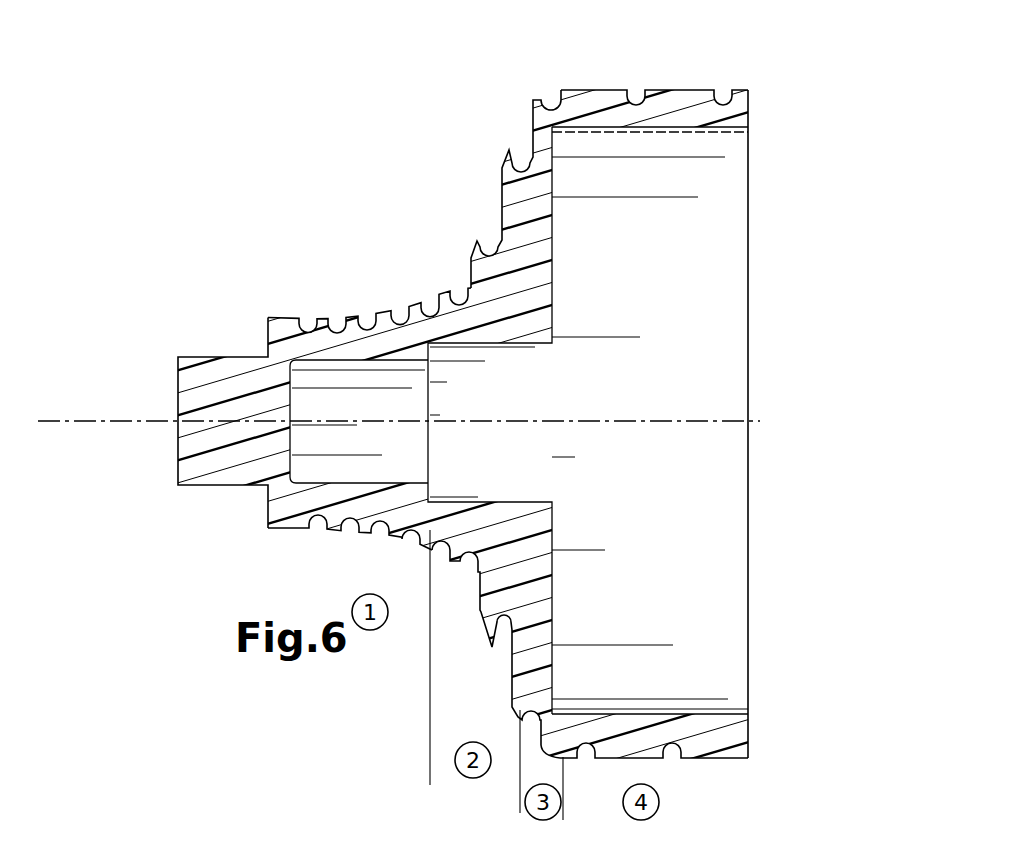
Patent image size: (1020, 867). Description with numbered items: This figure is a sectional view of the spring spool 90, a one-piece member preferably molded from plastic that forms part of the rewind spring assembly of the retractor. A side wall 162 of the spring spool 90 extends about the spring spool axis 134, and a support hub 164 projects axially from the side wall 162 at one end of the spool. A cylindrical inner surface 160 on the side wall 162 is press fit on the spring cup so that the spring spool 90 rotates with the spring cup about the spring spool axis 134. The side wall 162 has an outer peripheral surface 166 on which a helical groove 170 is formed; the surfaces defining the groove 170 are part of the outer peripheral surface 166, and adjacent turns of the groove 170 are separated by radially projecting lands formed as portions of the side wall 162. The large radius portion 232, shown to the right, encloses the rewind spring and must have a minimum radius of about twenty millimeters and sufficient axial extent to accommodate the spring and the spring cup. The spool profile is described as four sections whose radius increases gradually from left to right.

The spring spool 90 is at (240, 222).
The large radius portion 232 is at (563, 62).
The spring spool axis 134 is at (99, 424).
The cylindrical inner surface 160 is at (700, 127).
The side wall 162 is at (535, 237).
The support hub 164 is at (217, 355).
The outer peripheral surface 166 is at (277, 316).
The helical groove 170 is at (367, 326).